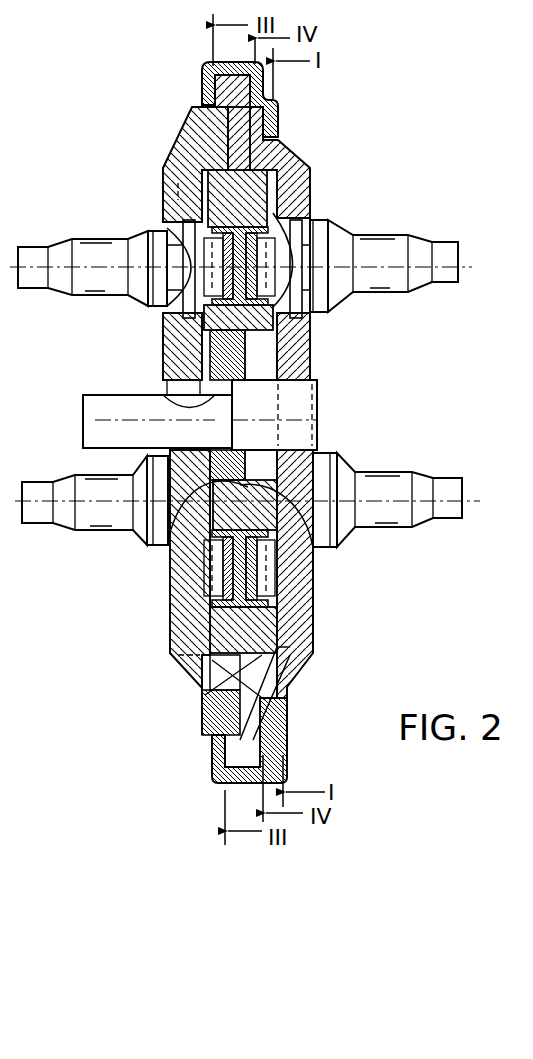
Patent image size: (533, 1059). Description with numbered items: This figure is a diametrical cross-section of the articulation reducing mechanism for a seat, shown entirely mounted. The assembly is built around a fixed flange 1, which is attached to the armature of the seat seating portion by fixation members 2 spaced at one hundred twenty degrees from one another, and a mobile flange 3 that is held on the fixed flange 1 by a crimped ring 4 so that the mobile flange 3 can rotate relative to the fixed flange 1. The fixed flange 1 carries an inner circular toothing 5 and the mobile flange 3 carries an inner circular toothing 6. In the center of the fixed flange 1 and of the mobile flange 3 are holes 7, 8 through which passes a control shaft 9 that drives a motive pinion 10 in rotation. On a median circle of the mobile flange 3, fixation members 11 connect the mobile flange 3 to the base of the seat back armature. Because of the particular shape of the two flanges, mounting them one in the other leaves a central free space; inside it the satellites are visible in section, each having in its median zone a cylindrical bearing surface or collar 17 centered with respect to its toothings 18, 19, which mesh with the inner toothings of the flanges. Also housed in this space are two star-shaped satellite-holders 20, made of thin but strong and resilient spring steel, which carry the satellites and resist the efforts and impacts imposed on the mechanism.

The fixed flange 1 is at (192, 172).
The fixation members 2 is at (62, 250).
The mobile flange 3 is at (296, 164).
The crimped ring 4 is at (202, 82).
The inner circular toothing 5 is at (232, 680).
The inner circular toothing 6 is at (288, 683).
The hole 7 is at (175, 372).
The hole 8 is at (310, 374).
The control shaft 9 is at (318, 402).
The motive pinion 10 is at (167, 393).
The fixation members 11 is at (386, 242).
The cylindrical bearing surface or collar 17 is at (276, 142).
The toothing 18 is at (167, 333).
The toothing 19 is at (310, 340).
The star-shaped satellite-holders 20 is at (160, 236).